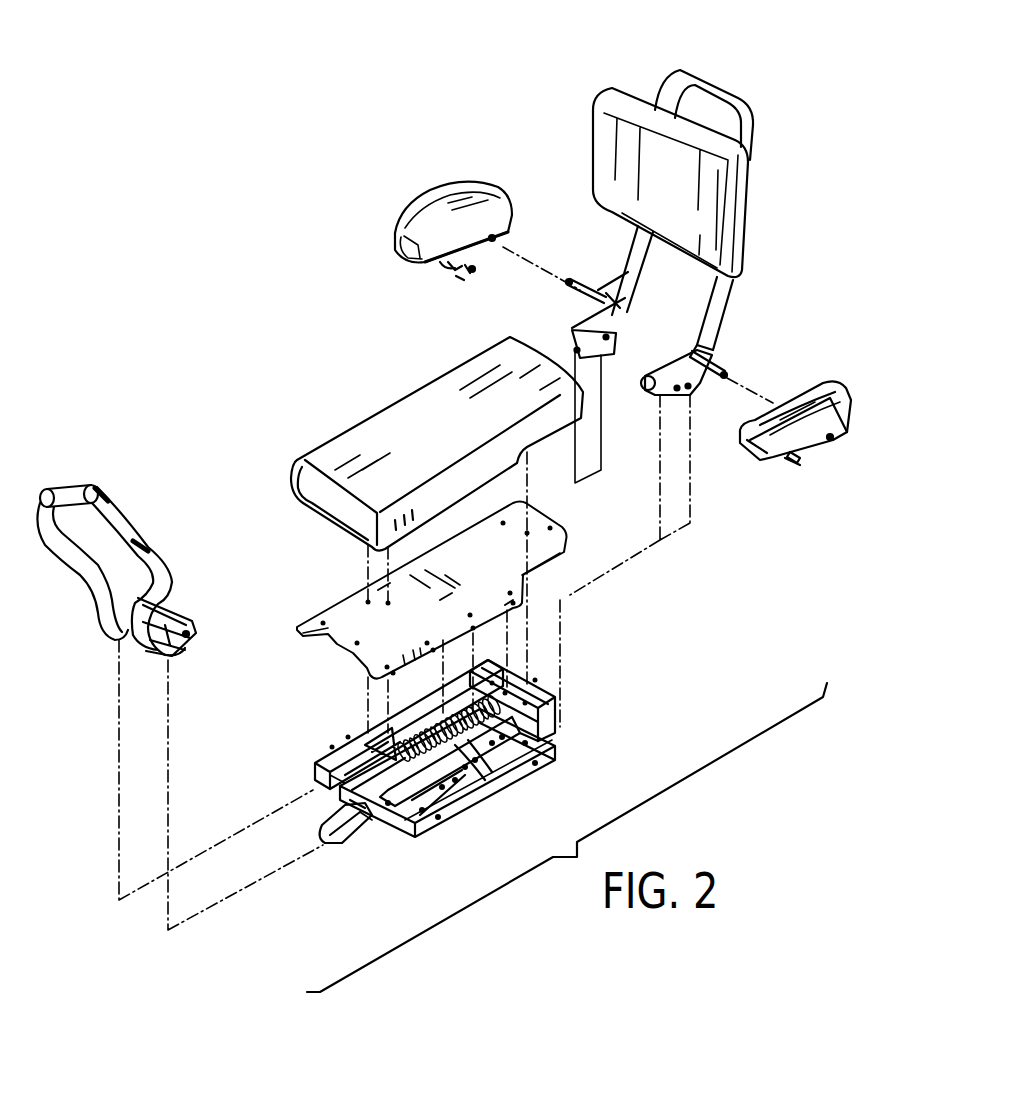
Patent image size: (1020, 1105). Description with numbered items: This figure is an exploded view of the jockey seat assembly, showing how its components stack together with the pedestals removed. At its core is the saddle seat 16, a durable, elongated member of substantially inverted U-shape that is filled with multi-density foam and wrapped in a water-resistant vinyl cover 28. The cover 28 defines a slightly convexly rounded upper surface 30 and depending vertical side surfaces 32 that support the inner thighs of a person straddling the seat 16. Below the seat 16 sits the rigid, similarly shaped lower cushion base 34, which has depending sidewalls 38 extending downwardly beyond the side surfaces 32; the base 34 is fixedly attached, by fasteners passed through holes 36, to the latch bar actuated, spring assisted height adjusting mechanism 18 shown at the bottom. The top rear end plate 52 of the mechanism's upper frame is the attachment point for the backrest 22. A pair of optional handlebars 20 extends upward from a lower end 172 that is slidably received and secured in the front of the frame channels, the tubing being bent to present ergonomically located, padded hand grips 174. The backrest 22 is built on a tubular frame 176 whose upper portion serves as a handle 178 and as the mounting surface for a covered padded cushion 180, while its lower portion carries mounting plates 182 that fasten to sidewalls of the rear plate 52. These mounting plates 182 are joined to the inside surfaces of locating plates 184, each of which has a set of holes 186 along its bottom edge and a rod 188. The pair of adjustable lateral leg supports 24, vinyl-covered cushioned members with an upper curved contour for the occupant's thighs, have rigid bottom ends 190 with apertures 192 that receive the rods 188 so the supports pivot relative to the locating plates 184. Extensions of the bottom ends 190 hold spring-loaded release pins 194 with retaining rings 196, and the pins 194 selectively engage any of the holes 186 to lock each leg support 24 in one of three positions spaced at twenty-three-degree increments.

The saddle seat 16 is at (301, 440).
The height adjusting mechanism 18 is at (562, 714).
The handlebars 20 is at (143, 565).
The backrest 22 is at (752, 223).
The adjustable lateral leg supports 24 is at (450, 177).
The vinyl cover 28 is at (393, 396).
The upper surface 30 is at (354, 440).
The side surfaces 32 is at (460, 483).
The lower cushion base 34 is at (520, 550).
The holes 36 is at (507, 525).
The sidewalls 38 is at (500, 607).
The top rear end plate 52 is at (547, 690).
The lower end 172 is at (193, 657).
The hand grips 174 is at (112, 498).
The tubular frame 176 is at (730, 291).
The handle 178 is at (720, 88).
The padded cushion 180 is at (658, 148).
The mounting plates 182 is at (658, 360).
The locating plates 184 is at (588, 292).
The holes 186 is at (670, 395).
The rod 188 is at (575, 295).
The rigid bottom ends 190 is at (448, 265).
The apertures 192 is at (496, 240).
The spring-loaded release pins 194 is at (474, 272).
The retaining rings 196 is at (463, 279).